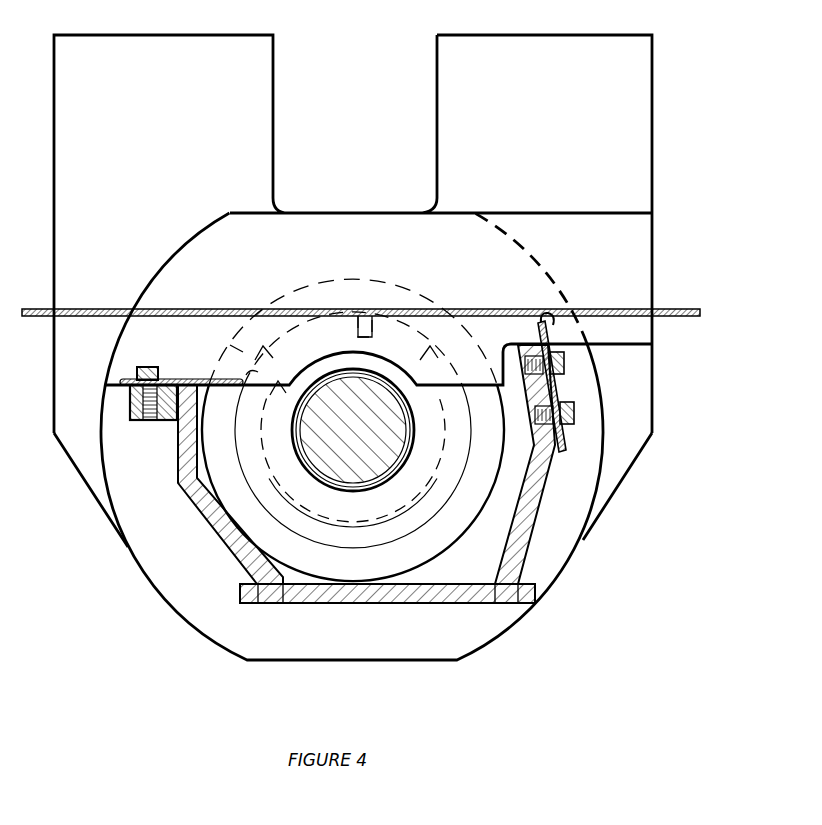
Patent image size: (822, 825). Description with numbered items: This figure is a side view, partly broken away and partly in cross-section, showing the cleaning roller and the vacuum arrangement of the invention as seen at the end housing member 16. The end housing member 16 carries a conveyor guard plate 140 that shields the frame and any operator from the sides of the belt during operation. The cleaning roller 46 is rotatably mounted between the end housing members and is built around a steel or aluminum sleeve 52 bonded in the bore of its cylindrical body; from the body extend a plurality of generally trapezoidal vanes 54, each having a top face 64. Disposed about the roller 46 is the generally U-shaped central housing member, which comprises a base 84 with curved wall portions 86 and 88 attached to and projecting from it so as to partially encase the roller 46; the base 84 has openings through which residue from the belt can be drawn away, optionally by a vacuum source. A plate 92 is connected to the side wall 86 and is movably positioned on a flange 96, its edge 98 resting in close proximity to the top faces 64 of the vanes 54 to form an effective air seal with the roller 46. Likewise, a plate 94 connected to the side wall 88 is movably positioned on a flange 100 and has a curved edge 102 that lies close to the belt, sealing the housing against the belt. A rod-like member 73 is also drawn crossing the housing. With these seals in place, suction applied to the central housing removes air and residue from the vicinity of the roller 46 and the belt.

The end housing member 16 is at (262, 131).
The conveyor guard plate 140 is at (196, 250).
The curved edge 102 is at (553, 283).
The rod 73 is at (668, 309).
The vanes 54 is at (257, 402).
The top face 64 is at (266, 353).
The edge 98 is at (248, 373).
The cleaning roller 46 is at (373, 340).
The sleeve 52 is at (413, 437).
The plate 92 is at (160, 383).
The flange 96 is at (130, 393).
The curved wall portion 86 is at (213, 527).
The base 84 is at (399, 598).
The curved wall portion 88 is at (545, 483).
The flange 100 is at (523, 347).
The plate 94 is at (557, 387).